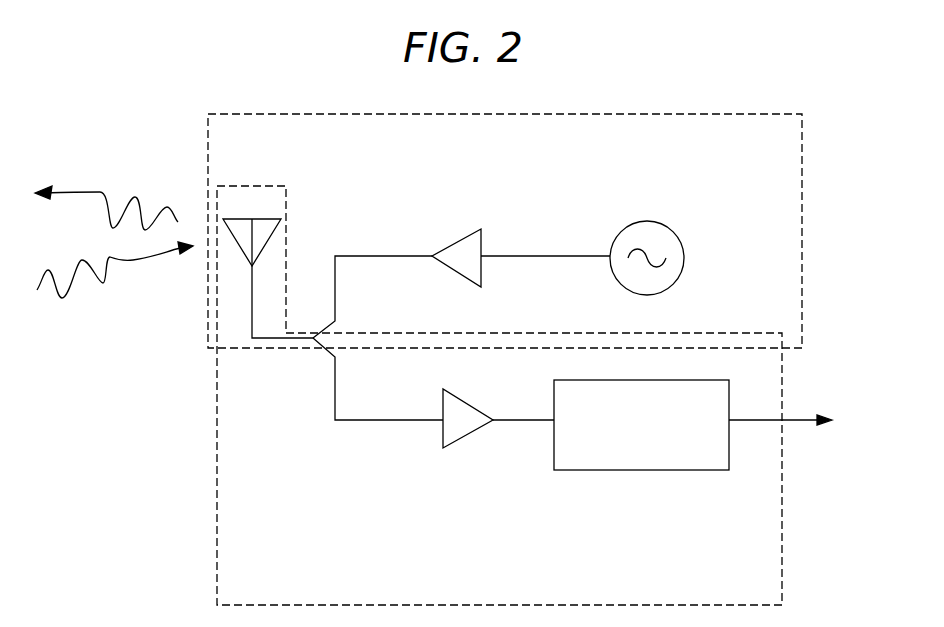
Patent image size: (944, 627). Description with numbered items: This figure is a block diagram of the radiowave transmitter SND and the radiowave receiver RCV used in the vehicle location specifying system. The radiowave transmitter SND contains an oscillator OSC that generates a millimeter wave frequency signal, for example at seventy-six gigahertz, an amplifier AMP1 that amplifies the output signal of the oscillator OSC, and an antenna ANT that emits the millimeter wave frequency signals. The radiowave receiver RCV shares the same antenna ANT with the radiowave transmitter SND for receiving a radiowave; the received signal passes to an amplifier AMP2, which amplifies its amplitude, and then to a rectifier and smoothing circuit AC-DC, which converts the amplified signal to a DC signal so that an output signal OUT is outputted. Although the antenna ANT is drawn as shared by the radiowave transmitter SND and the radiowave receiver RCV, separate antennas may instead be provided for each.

The radiowave transmitter SND is at (505, 231).
The radiowave receiver RCV is at (499, 395).
The antenna ANT is at (262, 219).
The amplifier AMP1 is at (452, 237).
The oscillator OSC is at (645, 221).
The amplifier AMP2 is at (465, 436).
The rectifier and smoothing circuit AC-DC is at (641, 425).
The output signal OUT is at (808, 427).